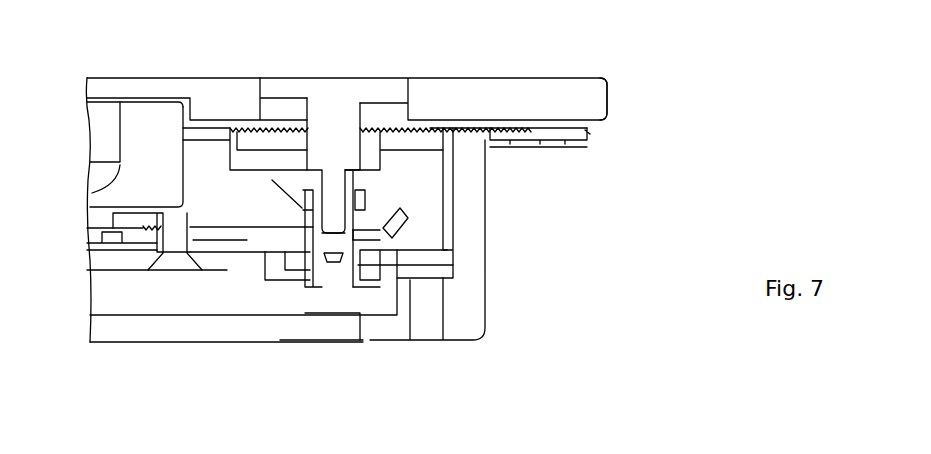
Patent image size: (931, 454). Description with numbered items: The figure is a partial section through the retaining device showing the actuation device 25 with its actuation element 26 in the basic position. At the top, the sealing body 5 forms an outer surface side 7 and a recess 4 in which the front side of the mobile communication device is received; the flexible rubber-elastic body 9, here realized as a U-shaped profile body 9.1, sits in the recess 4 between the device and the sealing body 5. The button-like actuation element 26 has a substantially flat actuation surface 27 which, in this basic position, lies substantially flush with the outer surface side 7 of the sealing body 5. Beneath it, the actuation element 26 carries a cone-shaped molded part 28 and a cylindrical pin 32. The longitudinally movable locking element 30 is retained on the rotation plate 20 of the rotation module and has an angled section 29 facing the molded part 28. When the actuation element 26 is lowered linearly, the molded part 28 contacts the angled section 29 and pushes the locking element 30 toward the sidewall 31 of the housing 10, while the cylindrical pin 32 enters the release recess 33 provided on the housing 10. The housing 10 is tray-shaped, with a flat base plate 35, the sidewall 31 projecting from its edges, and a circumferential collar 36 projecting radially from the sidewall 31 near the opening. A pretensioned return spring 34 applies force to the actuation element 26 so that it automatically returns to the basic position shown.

The recess 4 is at (100, 110).
The rubber-elastic body 9 is at (154, 130).
The U-shaped profile body 9.1 is at (105, 147).
The actuation surface 27 is at (307, 78).
The actuation element 26 is at (341, 113).
The cone-shaped molded part 28 is at (362, 207).
The outer surface side 7 is at (541, 79).
The sealing body 5 is at (592, 92).
The circumferential collar 36 is at (588, 135).
The angled section 29 is at (401, 213).
The sidewall 31 is at (478, 222).
The return spring 34 is at (380, 265).
The actuation device 25 is at (253, 205).
The housing 10 is at (483, 329).
The base plate 35 is at (197, 340).
The rotation plate 20 is at (232, 265).
The locking element 30 is at (255, 237).
The cylindrical pin 32 is at (338, 275).
The release recess 33 is at (350, 328).